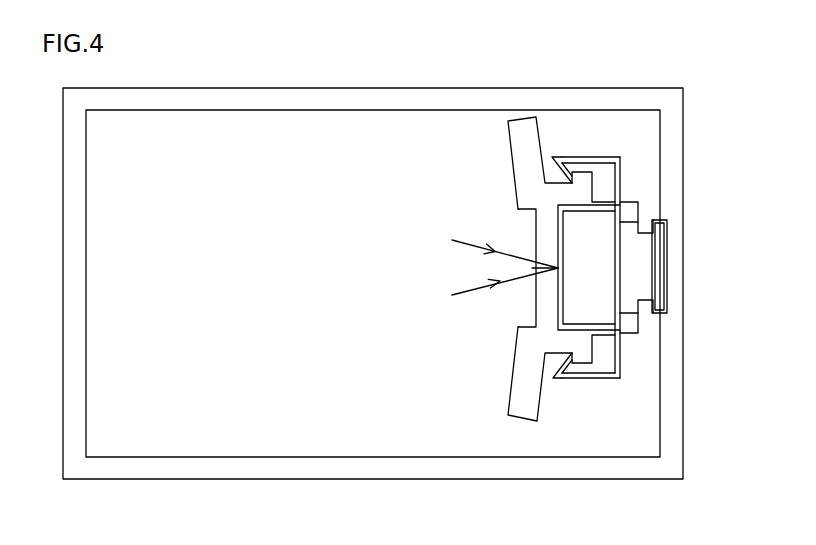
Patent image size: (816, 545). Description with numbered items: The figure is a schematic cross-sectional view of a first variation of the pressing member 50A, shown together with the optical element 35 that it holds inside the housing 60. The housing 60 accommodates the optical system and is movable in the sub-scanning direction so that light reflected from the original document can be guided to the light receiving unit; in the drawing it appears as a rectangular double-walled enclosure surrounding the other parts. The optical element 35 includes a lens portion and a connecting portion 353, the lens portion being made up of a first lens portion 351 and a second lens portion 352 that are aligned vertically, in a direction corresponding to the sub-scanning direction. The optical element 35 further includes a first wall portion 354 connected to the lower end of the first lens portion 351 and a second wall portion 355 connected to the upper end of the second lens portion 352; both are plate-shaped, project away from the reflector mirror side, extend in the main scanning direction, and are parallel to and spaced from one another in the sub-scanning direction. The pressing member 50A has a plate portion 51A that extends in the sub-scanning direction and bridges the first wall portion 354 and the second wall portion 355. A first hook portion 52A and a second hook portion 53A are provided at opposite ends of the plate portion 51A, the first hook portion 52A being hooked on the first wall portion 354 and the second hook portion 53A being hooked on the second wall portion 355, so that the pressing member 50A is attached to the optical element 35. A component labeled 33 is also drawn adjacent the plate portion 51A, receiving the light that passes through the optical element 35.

The light emitting element 33 is at (597, 267).
The optical element 35 is at (526, 285).
The first lens portion 351 is at (523, 128).
The second lens portion 352 is at (518, 407).
The connecting portion 353 is at (535, 302).
The first wall portion 354 is at (573, 195).
The second wall portion 355 is at (573, 342).
The pressing member 50A is at (648, 285).
The plate portion 51A is at (620, 347).
The first hook portion 52A is at (587, 155).
The second hook portion 53A is at (590, 380).
The housing 60 is at (633, 470).